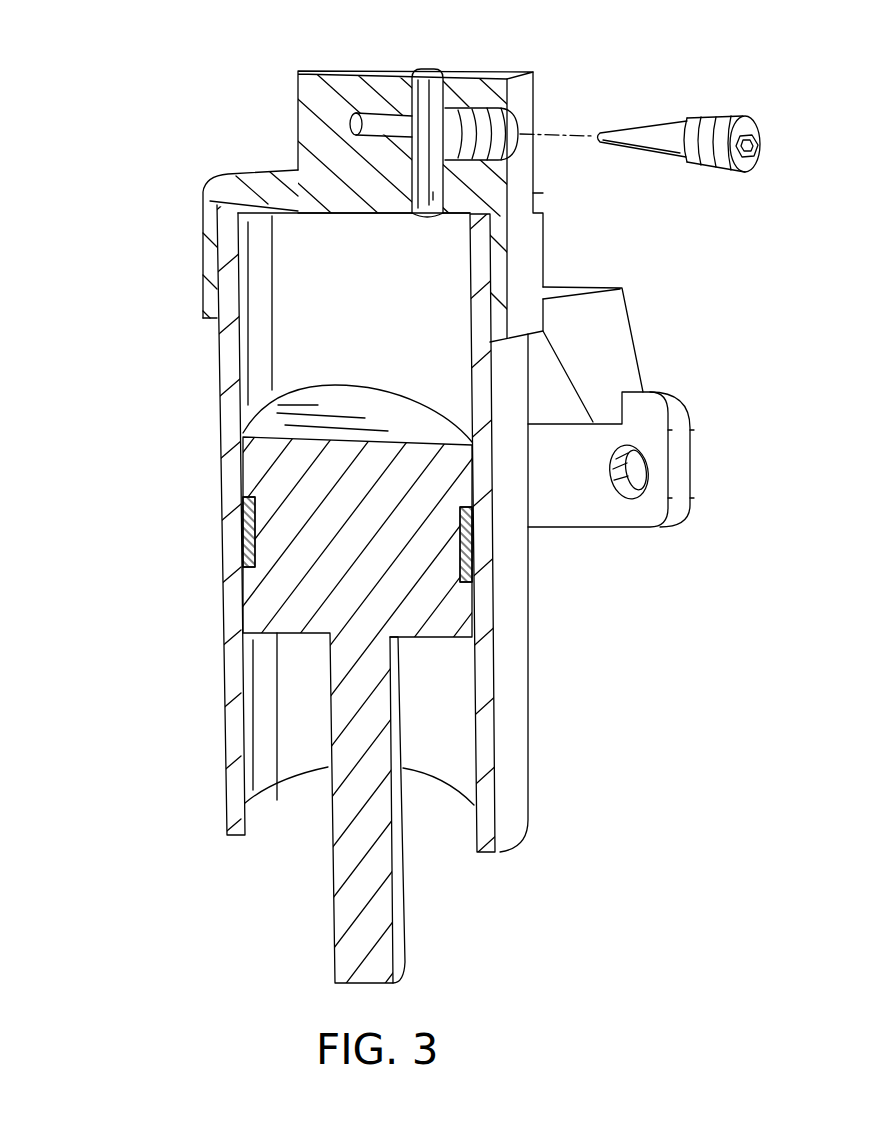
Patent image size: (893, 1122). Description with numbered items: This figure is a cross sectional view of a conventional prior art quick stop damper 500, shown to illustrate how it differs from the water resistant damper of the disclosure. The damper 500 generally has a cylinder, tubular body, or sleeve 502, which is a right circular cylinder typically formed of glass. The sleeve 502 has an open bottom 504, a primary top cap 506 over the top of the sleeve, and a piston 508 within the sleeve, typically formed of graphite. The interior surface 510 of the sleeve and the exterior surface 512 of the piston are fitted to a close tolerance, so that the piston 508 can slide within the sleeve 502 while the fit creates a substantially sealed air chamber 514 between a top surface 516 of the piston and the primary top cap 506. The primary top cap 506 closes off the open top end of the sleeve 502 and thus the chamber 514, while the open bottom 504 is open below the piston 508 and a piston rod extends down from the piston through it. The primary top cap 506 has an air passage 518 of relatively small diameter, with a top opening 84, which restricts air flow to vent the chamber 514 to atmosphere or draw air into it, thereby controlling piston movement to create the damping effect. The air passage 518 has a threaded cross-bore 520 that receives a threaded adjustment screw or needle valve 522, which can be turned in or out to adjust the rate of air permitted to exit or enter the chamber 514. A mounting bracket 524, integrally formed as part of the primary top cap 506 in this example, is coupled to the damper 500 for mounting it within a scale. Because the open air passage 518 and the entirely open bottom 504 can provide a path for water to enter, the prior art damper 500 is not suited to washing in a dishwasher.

The quick stop damper 500 is at (127, 234).
The sleeve 502 is at (518, 691).
The open bottom 504 is at (268, 792).
The primary top cap 506 is at (271, 165).
The piston 508 is at (278, 481).
The interior surface 510 is at (265, 703).
The exterior surface 512 is at (251, 578).
The air chamber 514 is at (336, 313).
The top surface 516 is at (366, 400).
The air passage 518 is at (433, 179).
The threaded cross-bore 520 is at (384, 124).
The needle valve 522 is at (660, 133).
The mounting bracket 524 is at (614, 338).
The top opening 84 is at (429, 72).